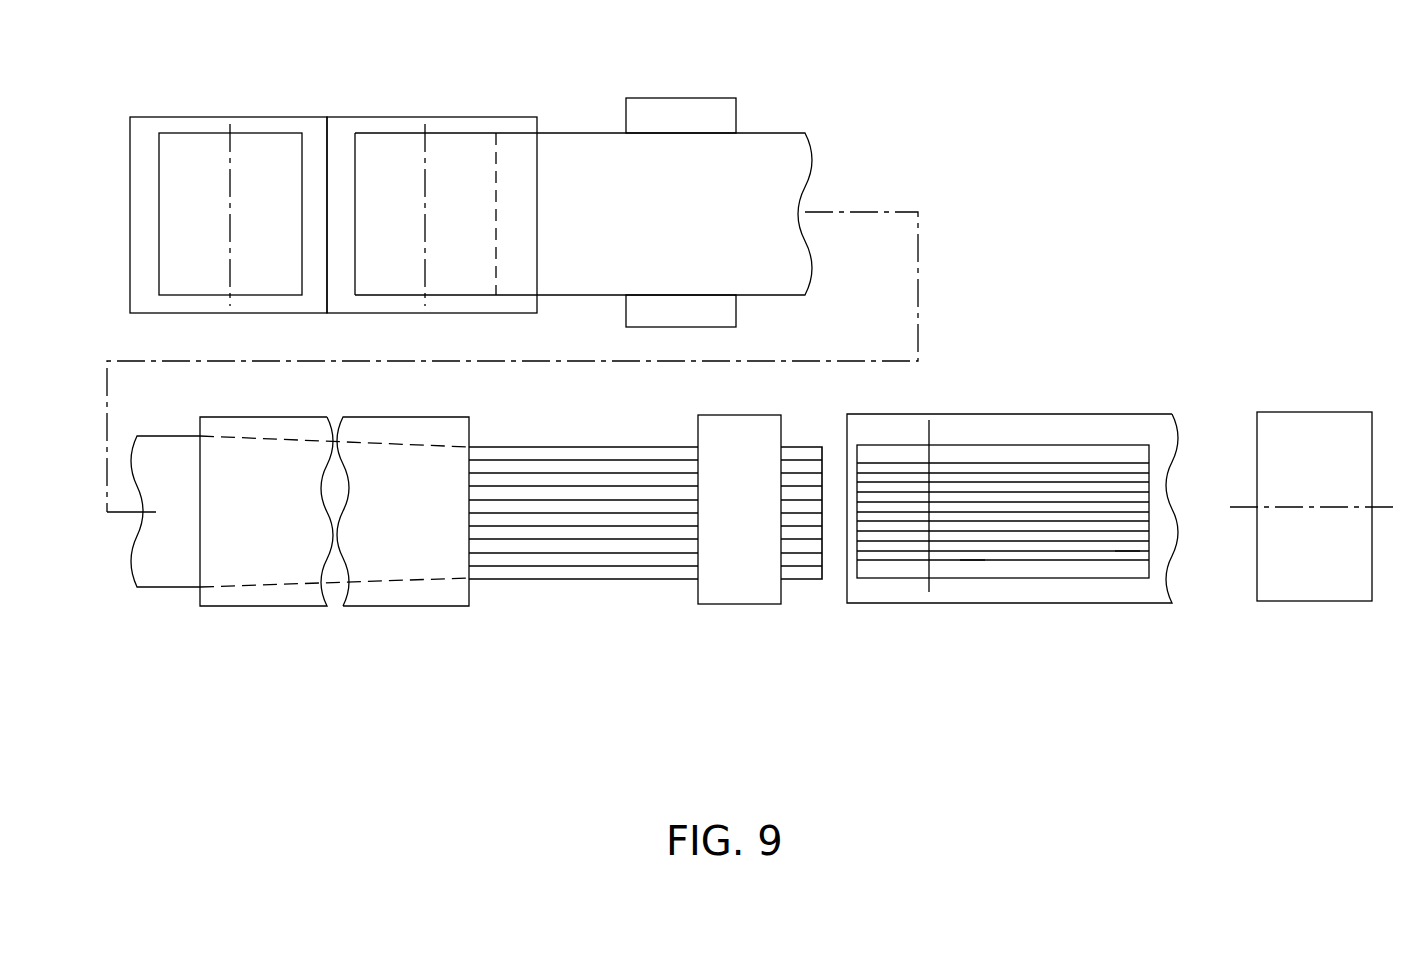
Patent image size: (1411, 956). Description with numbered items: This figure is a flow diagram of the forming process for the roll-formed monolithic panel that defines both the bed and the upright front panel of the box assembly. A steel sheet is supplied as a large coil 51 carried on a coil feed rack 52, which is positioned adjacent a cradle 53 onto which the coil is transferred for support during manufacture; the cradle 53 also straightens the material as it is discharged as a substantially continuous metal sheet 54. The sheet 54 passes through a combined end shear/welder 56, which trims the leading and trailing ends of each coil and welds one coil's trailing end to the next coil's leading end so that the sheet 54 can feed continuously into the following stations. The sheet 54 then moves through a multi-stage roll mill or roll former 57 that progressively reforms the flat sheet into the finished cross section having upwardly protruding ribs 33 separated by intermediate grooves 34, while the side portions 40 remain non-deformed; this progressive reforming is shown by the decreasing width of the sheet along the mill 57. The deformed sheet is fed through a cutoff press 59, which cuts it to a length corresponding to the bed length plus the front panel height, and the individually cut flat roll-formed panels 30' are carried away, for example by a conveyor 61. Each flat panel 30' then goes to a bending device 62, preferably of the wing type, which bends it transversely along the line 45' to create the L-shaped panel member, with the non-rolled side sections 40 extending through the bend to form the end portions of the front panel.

The roll-formed panel 30' is at (1020, 467).
The channels or ribs 33 is at (973, 557).
The grooves or recesses 34 is at (1127, 547).
The non-deformed side portions 40 is at (563, 455).
The bending line 45' is at (975, 471).
The coil 51 is at (188, 158).
The coil feed rack 52 is at (300, 120).
The cradle 53 is at (472, 120).
The continuous metal sheet 54 is at (582, 153).
The end shear/welder 56 is at (673, 113).
The roll mill or roll former 57 is at (258, 557).
The cutoff press 59 is at (723, 583).
The conveyor 61 is at (1165, 436).
The bending device (processing station) 62 is at (1297, 458).